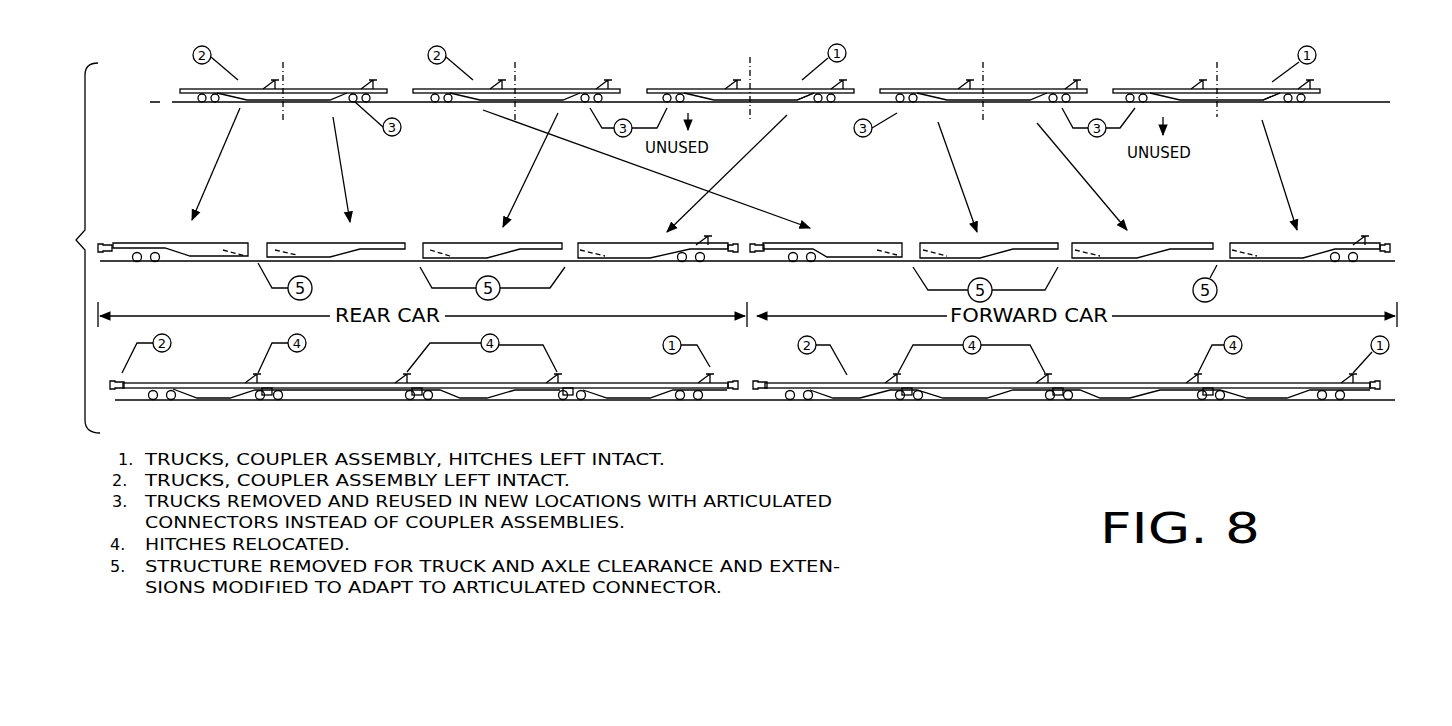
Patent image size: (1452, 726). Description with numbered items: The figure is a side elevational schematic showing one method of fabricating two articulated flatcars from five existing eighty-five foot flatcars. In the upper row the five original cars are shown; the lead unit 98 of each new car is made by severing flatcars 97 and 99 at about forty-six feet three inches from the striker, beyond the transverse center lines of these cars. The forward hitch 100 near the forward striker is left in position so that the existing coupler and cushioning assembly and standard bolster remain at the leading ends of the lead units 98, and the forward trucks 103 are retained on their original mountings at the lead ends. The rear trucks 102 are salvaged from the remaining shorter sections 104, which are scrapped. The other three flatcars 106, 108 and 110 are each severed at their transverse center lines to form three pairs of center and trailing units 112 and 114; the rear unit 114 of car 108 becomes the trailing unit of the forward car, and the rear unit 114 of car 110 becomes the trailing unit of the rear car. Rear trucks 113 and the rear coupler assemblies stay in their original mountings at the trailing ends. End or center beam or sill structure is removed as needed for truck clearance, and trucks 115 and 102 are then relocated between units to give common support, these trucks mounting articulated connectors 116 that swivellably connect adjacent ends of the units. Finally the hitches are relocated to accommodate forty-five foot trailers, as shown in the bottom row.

The flatcar 97 is at (1247, 85).
The lead unit 98 is at (1277, 103).
The flatcar 99 is at (770, 85).
The forward hitch 100 is at (1307, 92).
The rear trucks 102 is at (1223, 402).
The forward trucks 103 is at (1340, 402).
The sections 104 is at (1165, 92).
The flatcar 106 is at (998, 83).
The flatcar 108 is at (557, 60).
The flatcar 110 is at (319, 86).
The center unit 112 is at (510, 243).
The rear trucks 113 is at (808, 402).
The trailing unit 114 is at (228, 245).
The trucks 115 is at (1067, 402).
The articulated connectors 116 is at (1213, 388).